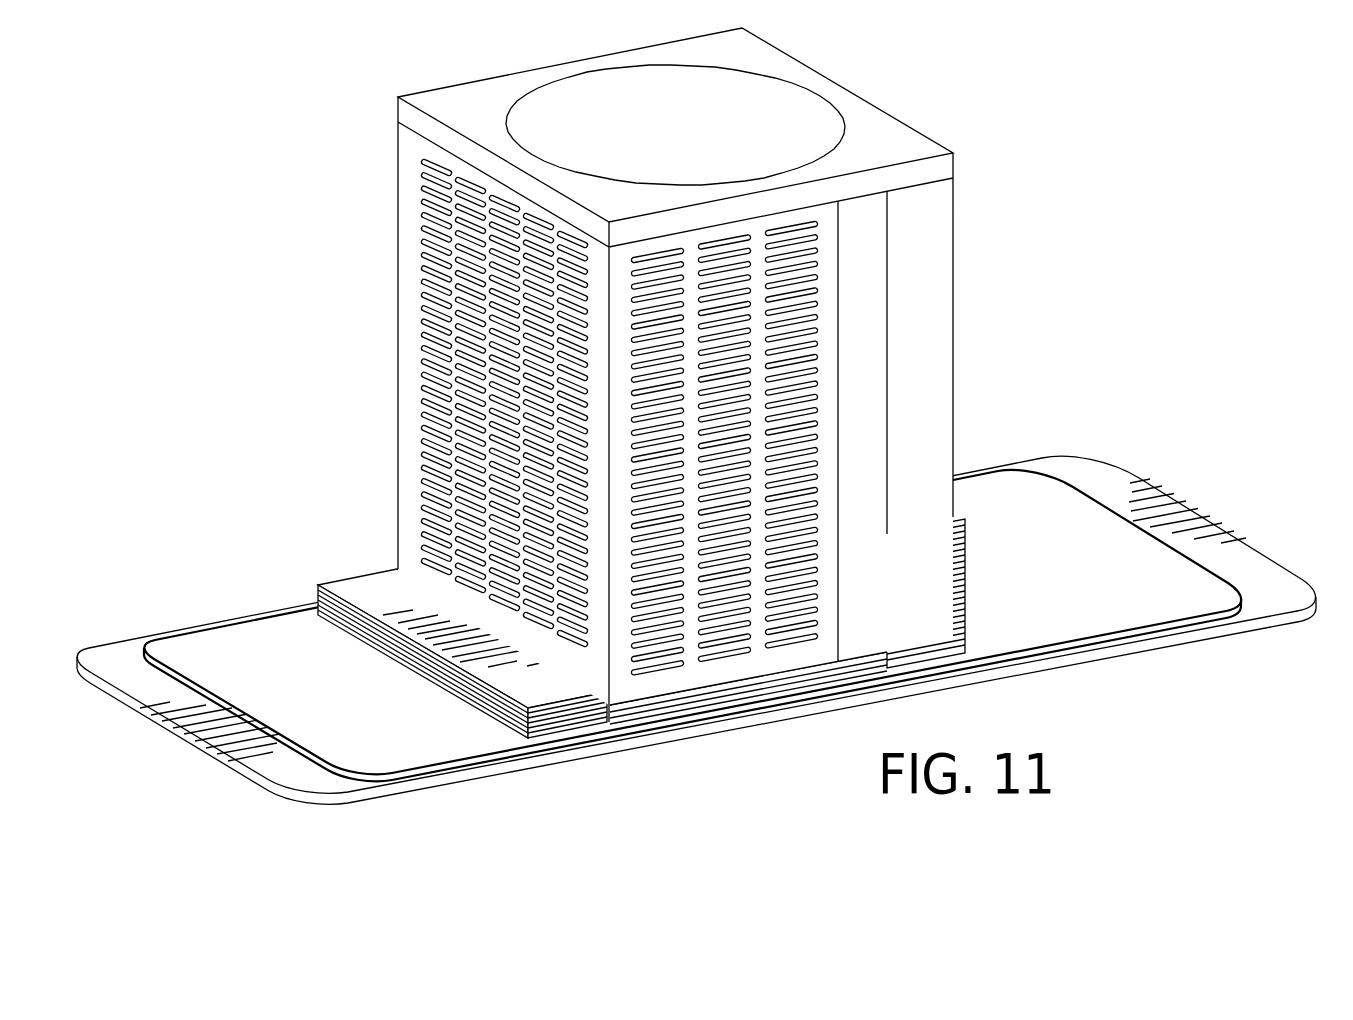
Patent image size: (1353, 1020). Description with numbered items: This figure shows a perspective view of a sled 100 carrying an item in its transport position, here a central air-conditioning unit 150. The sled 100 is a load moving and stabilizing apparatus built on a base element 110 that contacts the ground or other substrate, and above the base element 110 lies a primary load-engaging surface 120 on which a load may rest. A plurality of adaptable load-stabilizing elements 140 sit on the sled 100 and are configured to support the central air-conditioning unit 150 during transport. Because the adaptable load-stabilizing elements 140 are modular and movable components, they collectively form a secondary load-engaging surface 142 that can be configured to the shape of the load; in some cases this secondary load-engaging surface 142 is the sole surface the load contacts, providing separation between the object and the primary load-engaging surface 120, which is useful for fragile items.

The sled 100 is at (202, 357).
The base element 110 is at (178, 738).
The primary load-engaging surface 120 is at (298, 755).
The adaptable load-stabilizing elements 140 is at (583, 723).
The secondary load-engaging surface 142 is at (391, 592).
The central air-conditioning unit 150 is at (918, 105).